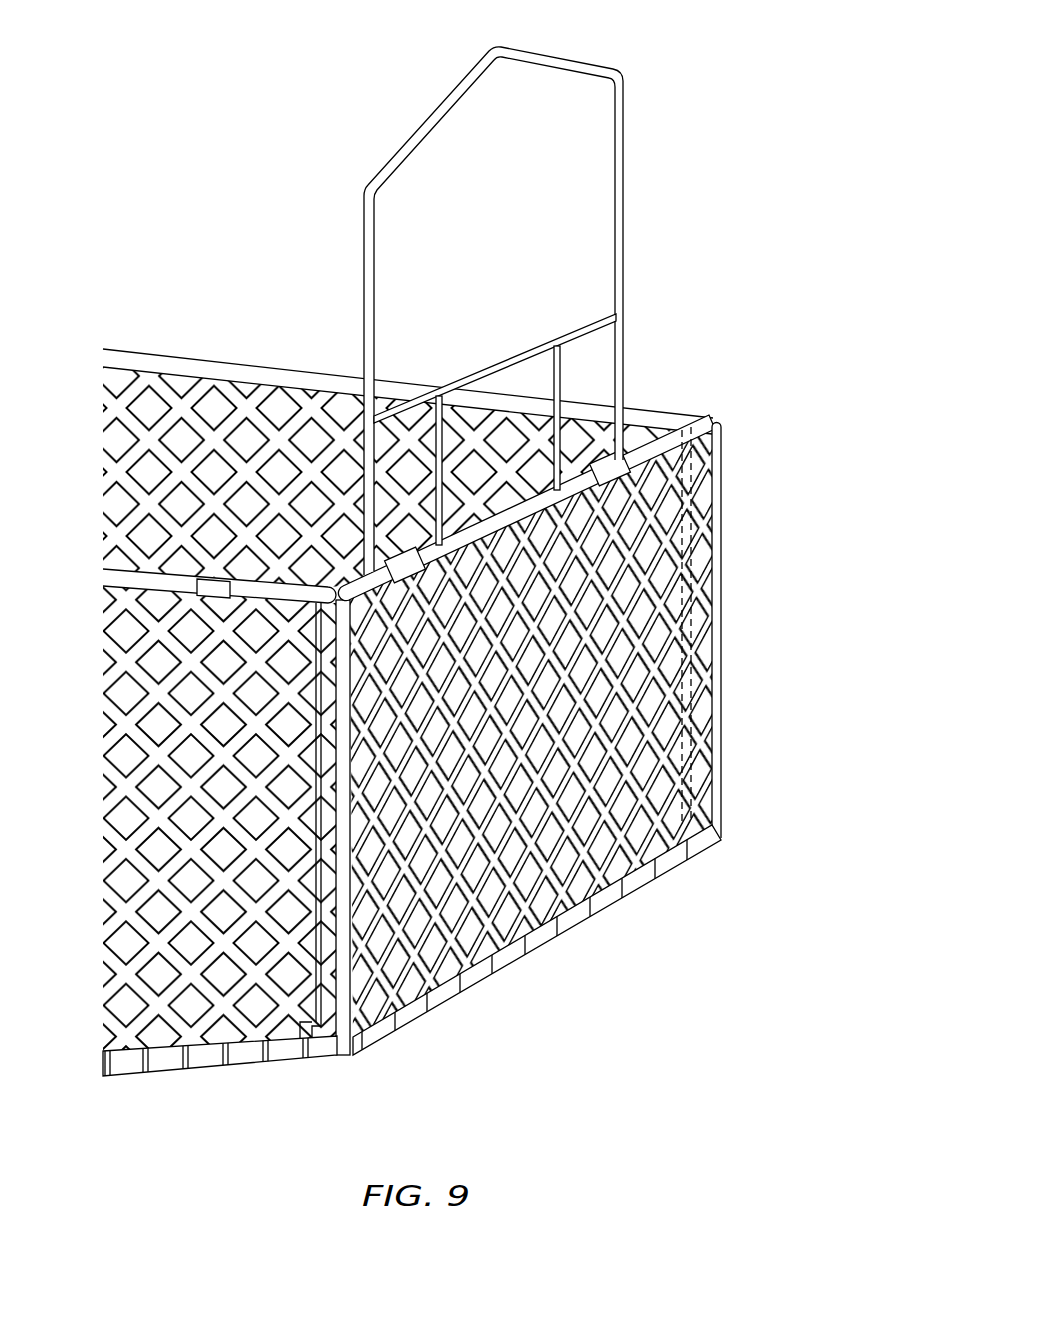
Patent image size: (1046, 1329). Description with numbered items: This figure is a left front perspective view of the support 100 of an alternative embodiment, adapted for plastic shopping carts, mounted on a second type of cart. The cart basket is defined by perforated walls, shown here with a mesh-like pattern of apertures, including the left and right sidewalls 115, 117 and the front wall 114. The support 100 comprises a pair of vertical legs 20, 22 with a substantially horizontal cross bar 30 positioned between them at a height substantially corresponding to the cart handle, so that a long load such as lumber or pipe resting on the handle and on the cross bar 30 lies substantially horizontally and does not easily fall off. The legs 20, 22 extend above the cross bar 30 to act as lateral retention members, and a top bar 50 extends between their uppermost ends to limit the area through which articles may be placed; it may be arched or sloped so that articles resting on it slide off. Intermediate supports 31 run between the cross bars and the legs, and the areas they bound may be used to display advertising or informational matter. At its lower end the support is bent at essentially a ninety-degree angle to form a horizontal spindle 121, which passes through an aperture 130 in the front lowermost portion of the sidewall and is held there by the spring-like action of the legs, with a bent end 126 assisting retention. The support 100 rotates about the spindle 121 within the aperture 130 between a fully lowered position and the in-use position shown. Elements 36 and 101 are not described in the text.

The vertical leg 20 is at (376, 258).
The vertical leg 22 is at (628, 206).
The top bar 50 is at (547, 47).
The cross bar 30 is at (516, 356).
The intermediate support 31 is at (448, 447).
The clip 36 is at (425, 586).
The support 100 is at (453, 985).
The end post 101 is at (697, 677).
The front wall 114 is at (600, 868).
The left sidewall 115 is at (200, 883).
The right sidewall 117 is at (190, 445).
The horizontal spindle 121 is at (308, 1018).
The bent end 126 is at (313, 1043).
The aperture 130 is at (356, 1047).